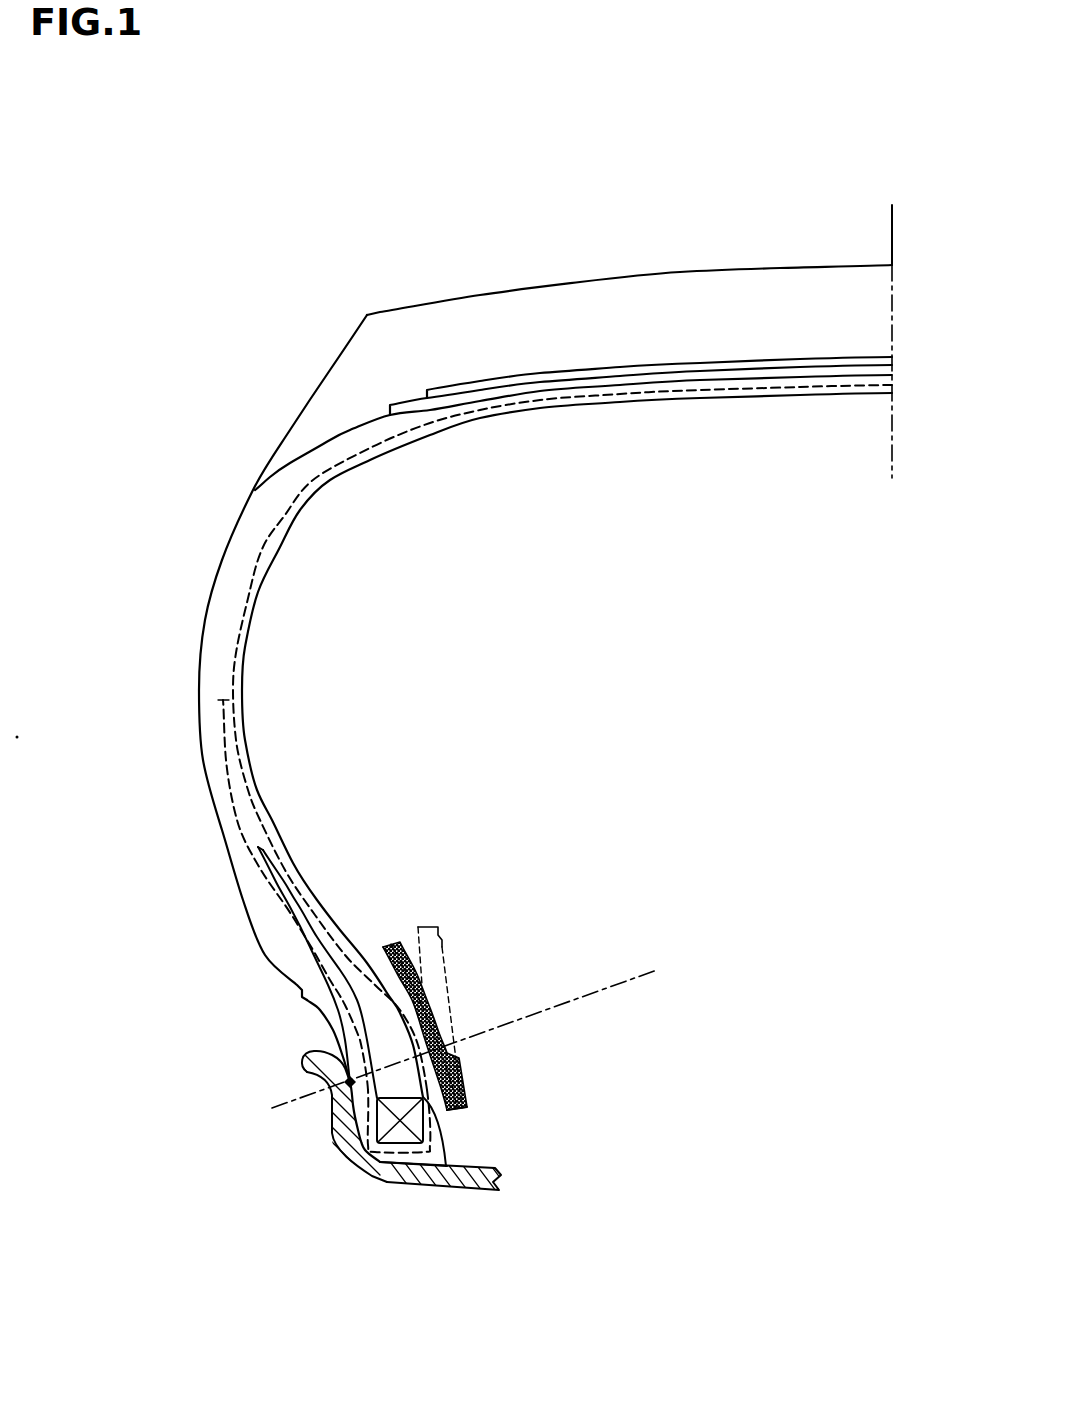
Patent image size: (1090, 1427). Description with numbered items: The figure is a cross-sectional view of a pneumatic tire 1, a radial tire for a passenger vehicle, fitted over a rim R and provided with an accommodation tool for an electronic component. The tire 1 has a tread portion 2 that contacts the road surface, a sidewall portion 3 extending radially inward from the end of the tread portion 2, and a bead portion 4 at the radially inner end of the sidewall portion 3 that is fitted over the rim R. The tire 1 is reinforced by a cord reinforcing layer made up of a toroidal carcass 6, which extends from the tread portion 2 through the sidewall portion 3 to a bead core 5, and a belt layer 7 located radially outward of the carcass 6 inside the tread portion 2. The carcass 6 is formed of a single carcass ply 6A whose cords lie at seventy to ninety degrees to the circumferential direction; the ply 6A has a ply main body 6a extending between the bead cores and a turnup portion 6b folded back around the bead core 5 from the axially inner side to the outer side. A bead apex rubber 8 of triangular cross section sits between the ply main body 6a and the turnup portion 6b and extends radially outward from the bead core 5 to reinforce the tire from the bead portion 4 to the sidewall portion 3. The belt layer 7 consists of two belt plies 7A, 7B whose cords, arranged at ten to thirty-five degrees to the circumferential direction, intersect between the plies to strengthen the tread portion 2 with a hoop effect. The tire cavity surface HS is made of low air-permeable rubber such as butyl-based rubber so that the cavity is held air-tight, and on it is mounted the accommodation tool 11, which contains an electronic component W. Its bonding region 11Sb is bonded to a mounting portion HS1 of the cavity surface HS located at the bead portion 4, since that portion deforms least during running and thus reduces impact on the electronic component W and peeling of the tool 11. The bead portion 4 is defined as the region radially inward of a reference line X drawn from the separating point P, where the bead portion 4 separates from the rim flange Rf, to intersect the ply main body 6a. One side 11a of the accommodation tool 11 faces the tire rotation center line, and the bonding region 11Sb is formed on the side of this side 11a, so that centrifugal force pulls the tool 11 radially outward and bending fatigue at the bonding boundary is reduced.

The pneumatic tire 1 is at (496, 709).
The tread portion 2 is at (652, 295).
The sidewall portion 3 is at (178, 642).
The bead portion 4 is at (462, 1156).
The bead core 5 is at (397, 1135).
The carcass 6 is at (555, 769).
The carcass ply 6A is at (555, 769).
The ply main body 6a is at (235, 647).
The turnup portion 6b is at (219, 757).
The belt layer 7 is at (641, 478).
The belt ply 7A is at (650, 378).
The belt ply 7B is at (713, 365).
The bead apex rubber 8 is at (328, 948).
The accommodation tool 11 is at (499, 1080).
The side of the accommodation tool 11a is at (450, 1113).
The bonding region 11Sb is at (450, 1027).
The electronic component W is at (436, 990).
The reference line X is at (657, 970).
The tire cavity surface HS is at (273, 823).
The mounting portion HS1 is at (443, 1113).
The rim flange Rf is at (333, 1110).
The separating point P is at (348, 1160).
The rim R is at (473, 1178).